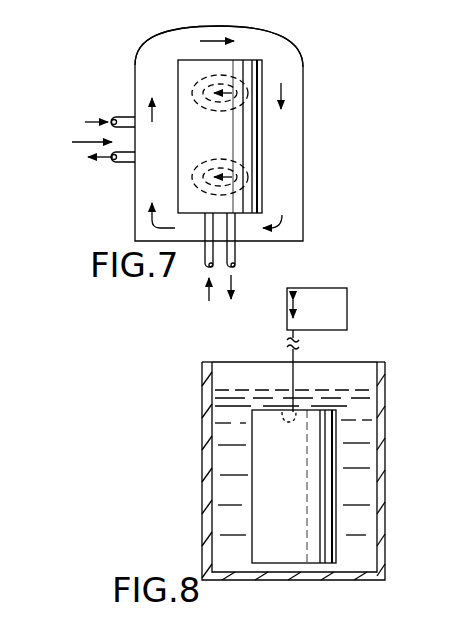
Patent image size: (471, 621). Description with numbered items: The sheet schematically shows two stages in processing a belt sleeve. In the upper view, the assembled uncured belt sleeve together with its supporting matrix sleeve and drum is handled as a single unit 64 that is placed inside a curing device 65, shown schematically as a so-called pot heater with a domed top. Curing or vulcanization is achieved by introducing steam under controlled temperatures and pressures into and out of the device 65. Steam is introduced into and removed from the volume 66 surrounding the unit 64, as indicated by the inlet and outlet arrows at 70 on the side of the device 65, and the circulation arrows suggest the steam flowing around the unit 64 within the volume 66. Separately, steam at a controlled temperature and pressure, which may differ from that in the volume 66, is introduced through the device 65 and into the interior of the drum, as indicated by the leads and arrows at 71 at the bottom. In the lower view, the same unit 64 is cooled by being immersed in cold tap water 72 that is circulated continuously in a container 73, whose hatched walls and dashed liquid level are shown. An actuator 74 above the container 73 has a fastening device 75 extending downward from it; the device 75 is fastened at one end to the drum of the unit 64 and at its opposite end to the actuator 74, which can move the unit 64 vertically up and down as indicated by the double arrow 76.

In FIG. 7, the unit 64 is at (264, 68).
In FIG. 8, the unit 64 is at (251, 483).
In FIG. 7, the curing device 65 is at (307, 121).
In FIG. 7, the volume 66 is at (158, 60).
In FIG. 7, the steam introduction and removal 70 is at (84, 140).
In FIG. 7, the steam introduction within the drum 71 is at (199, 291).
In FIG. 8, the cold tap water 72 is at (355, 390).
In FIG. 8, the container 73 is at (202, 385).
In FIG. 8, the actuator 74 is at (288, 313).
In FIG. 8, the fastening device 75 is at (294, 381).
In FIG. 8, the double arrow 76 is at (288, 313).